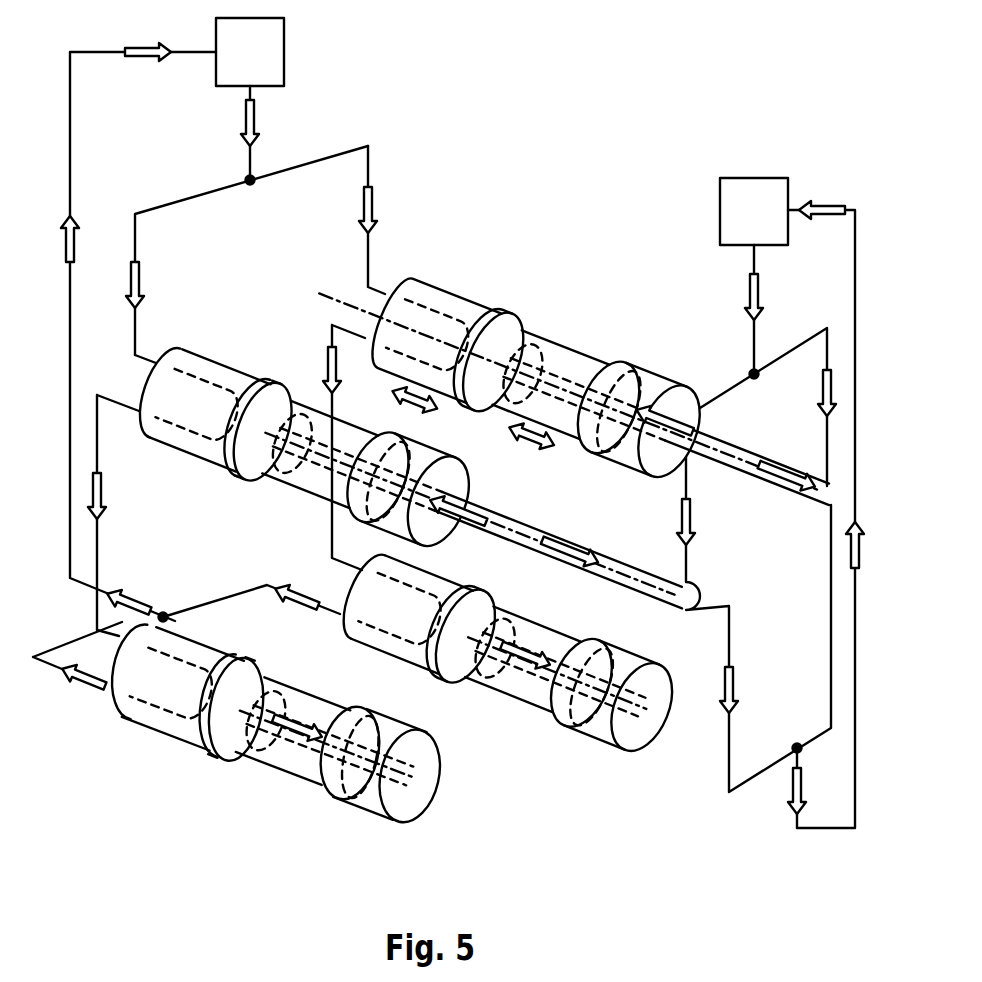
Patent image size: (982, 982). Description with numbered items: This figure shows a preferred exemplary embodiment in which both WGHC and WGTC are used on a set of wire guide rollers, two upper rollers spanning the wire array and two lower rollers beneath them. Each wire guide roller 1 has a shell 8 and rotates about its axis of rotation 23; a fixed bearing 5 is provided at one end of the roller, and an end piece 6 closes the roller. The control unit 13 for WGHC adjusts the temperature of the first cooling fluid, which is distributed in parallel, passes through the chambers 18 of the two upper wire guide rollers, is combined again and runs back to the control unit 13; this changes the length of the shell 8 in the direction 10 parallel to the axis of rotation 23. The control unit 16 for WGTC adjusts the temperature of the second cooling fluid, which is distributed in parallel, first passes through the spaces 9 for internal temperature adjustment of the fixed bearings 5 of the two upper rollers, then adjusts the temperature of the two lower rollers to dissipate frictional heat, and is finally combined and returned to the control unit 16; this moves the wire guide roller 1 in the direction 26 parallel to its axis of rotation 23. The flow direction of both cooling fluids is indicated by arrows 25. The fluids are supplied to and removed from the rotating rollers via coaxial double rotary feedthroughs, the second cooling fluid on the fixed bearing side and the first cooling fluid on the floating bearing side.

The wire guide roller 1 is at (601, 354).
The fixed bearing 5 is at (487, 316).
The end cap 6 is at (639, 388).
The shell 8 is at (562, 338).
The space for internal temperature adjustment 9 is at (430, 316).
The direction of shell length change 10 is at (521, 455).
The control unit for WGHC 13 is at (750, 186).
The control unit for WGTC 16 is at (273, 44).
The chamber 18 is at (590, 362).
The axis of rotation 23 is at (318, 290).
The arrows 25 is at (377, 202).
The direction of roller movement 26 is at (412, 406).